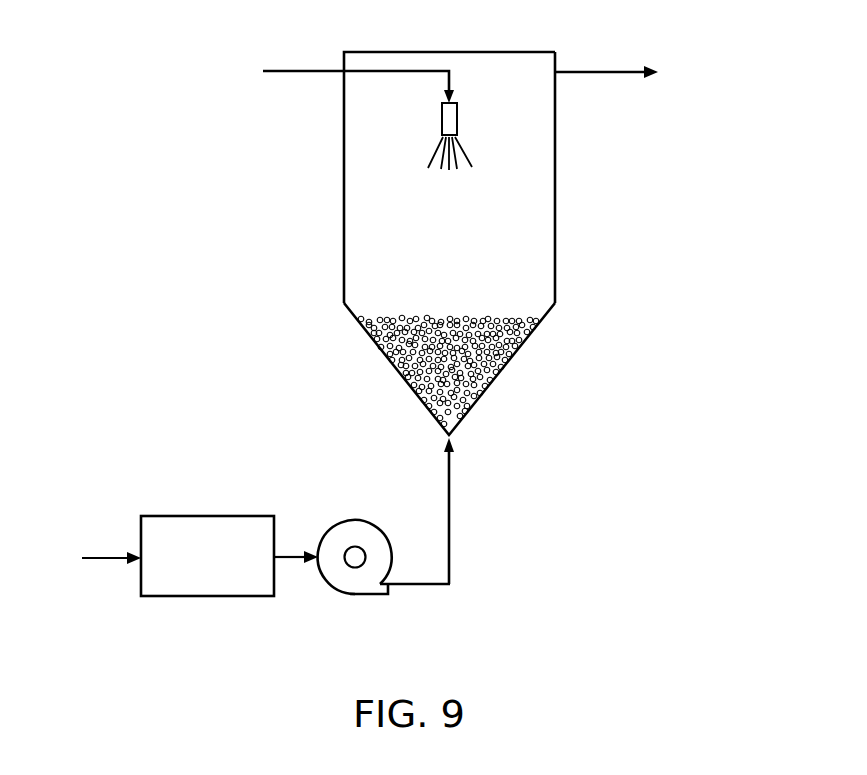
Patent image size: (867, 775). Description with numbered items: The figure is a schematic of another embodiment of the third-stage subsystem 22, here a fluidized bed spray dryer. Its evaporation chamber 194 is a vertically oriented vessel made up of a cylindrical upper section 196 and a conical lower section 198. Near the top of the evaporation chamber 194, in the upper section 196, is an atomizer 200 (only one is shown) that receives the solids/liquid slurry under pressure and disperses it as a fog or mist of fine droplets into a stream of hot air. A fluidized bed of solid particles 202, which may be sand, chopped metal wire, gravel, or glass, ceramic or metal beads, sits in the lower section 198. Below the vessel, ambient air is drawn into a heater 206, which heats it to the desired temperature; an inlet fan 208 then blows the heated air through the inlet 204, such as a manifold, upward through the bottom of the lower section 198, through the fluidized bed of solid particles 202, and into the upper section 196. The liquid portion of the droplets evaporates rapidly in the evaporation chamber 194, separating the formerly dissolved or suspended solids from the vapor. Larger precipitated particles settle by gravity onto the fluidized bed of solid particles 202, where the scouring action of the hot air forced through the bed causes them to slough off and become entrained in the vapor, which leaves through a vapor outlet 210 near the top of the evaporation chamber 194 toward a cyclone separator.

The third-stage subsystem 22 is at (166, 268).
The evaporation chamber 194 is at (344, 173).
The cylindrical upper section 196 is at (540, 172).
The conical lower section 198 is at (517, 352).
The atomizer 200 is at (458, 117).
The fluidized bed of solid particles 202 is at (476, 378).
The inlet 204 is at (447, 438).
The heater 206 is at (207, 516).
The inlet fan 208 is at (380, 548).
The vapor outlet 210 is at (556, 72).